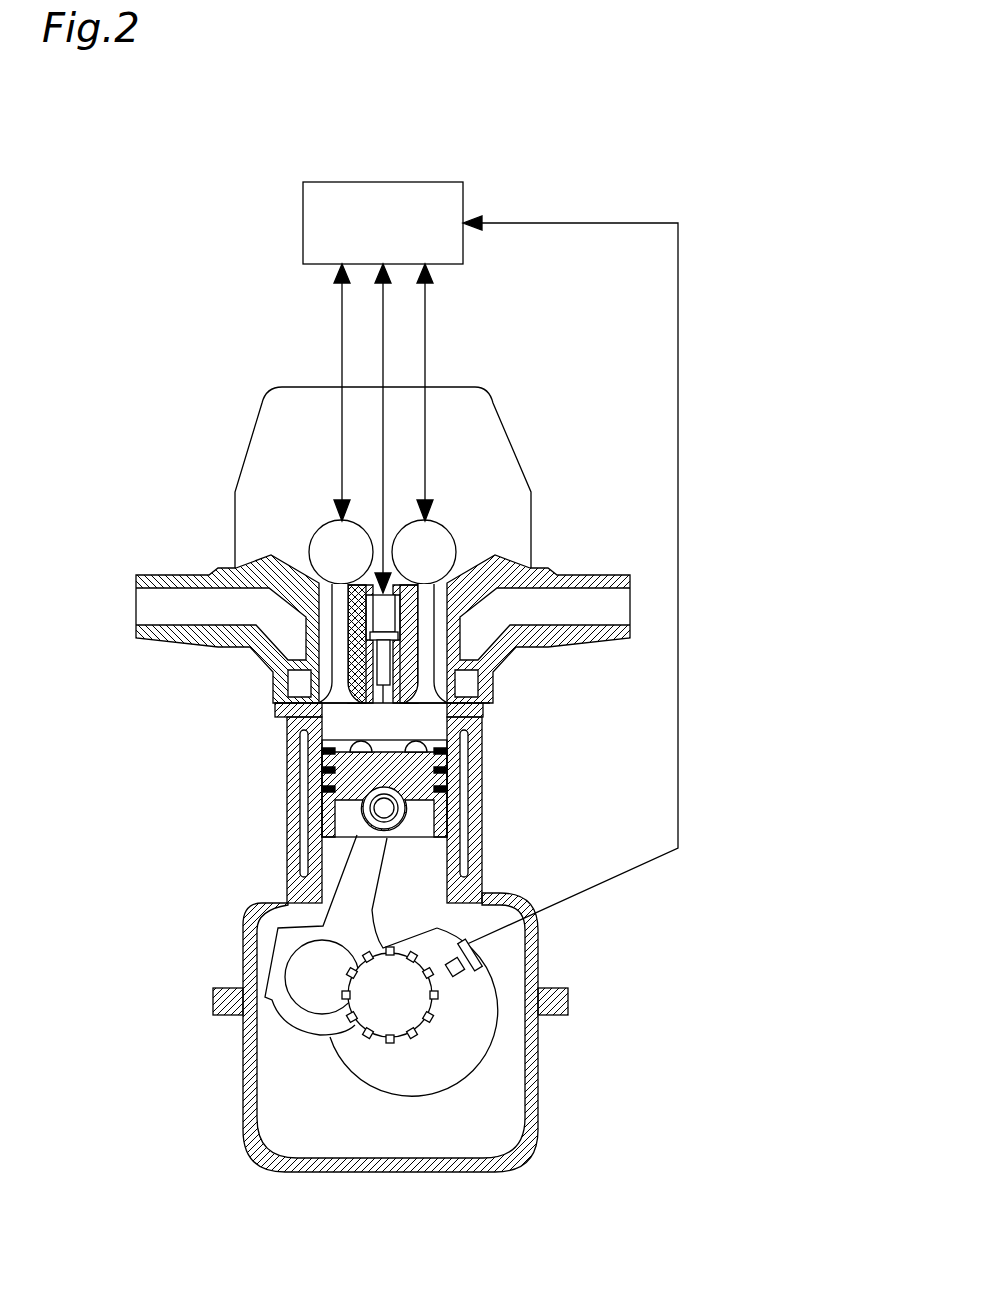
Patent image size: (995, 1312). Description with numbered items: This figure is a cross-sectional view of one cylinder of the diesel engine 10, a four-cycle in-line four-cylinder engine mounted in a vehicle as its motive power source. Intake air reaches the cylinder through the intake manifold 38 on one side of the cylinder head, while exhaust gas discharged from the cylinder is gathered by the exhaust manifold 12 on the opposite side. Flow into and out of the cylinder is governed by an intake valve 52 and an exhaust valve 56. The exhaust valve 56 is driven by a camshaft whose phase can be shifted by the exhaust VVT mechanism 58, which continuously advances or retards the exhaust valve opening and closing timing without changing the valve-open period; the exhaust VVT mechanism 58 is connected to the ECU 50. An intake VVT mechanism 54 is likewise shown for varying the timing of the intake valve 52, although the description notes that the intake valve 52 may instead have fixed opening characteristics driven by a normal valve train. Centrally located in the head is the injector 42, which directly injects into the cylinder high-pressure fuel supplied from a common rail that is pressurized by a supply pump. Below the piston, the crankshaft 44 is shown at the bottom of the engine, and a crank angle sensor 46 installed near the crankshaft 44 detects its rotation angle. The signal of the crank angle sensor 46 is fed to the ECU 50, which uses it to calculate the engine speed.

The diesel engine 10 is at (287, 872).
The exhaust manifold 12 is at (593, 602).
The intake manifold 38 is at (173, 602).
The injector 42 is at (383, 703).
The crankshaft 44 is at (388, 1025).
The crank angle sensor 46 is at (458, 968).
The ECU 50 is at (424, 182).
The intake valve 52 is at (335, 702).
The intake VVT mechanism 54 is at (327, 535).
The exhaust valve 56 is at (427, 702).
The exhaust VVT mechanism 58 is at (439, 535).